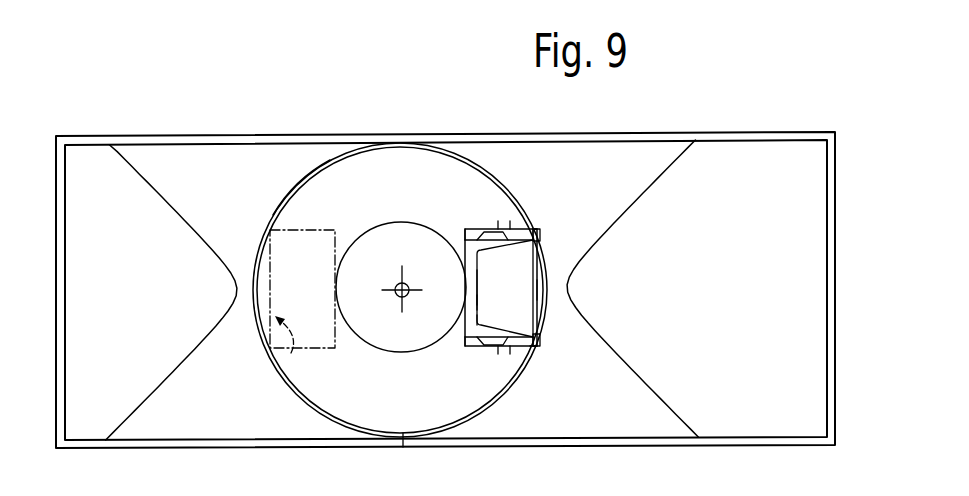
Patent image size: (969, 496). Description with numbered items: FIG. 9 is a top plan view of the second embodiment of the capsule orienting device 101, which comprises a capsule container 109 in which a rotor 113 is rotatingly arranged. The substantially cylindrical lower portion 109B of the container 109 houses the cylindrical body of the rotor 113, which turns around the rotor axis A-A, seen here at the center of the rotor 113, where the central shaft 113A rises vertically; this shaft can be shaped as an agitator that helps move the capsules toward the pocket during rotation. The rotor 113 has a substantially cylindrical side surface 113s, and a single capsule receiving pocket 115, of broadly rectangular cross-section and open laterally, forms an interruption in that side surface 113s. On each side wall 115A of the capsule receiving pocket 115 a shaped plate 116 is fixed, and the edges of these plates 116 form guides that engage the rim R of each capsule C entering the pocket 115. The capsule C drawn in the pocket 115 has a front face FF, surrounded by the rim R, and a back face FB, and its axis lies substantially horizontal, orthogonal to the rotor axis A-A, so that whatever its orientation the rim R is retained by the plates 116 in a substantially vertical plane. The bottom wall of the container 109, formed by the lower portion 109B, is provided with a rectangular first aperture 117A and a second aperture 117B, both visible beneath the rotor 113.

The capsule orienting device 101 is at (327, 124).
The capsule container 109 is at (756, 169).
The lower portion of the container 109B is at (541, 265).
The rotor 113 is at (418, 388).
The cylindrical side surface of the rotor 113s is at (289, 189).
The central shaft 113A is at (395, 238).
The rotor axis A-A is at (407, 285).
The first aperture 117A is at (278, 369).
The capsule receiving pocket 115 is at (492, 260).
The side wall of the capsule receiving pocket 115A is at (468, 231).
The shaped plate 116 is at (524, 220).
The capsule C is at (515, 302).
The back face FB is at (485, 303).
The second aperture 117B is at (468, 326).
The front face FF is at (537, 293).
The capsule rim R is at (533, 357).